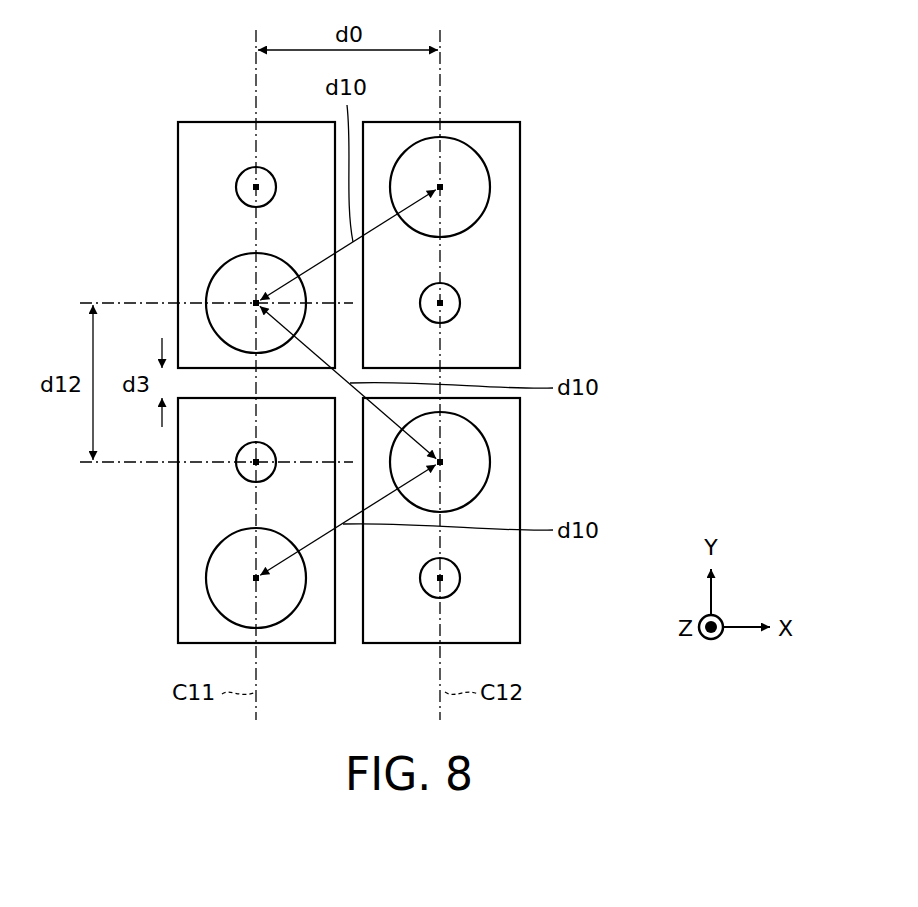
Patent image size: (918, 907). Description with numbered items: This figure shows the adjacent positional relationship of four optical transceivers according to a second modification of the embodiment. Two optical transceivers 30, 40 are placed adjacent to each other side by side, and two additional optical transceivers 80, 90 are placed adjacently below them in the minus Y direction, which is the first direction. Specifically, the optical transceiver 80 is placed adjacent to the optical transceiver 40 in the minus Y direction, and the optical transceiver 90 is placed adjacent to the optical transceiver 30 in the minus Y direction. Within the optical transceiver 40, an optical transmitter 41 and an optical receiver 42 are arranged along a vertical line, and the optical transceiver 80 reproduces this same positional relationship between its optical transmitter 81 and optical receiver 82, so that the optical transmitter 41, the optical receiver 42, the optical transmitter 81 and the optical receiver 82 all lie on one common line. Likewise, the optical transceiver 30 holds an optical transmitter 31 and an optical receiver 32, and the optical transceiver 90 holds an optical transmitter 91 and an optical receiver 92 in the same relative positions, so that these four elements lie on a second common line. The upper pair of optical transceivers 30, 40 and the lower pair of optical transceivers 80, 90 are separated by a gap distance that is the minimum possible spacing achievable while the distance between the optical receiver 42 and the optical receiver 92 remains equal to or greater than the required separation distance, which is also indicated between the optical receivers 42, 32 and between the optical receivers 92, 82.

The optical transceiver 30 is at (520, 136).
The optical transmitter 31 is at (443, 303).
The optical receiver 32 is at (443, 187).
The optical transceiver 40 is at (178, 136).
The optical transmitter 41 is at (253, 188).
The optical receiver 42 is at (254, 302).
The optical transceiver 80 is at (178, 623).
The optical transmitter 81 is at (253, 463).
The optical receiver 82 is at (253, 578).
The optical transceiver 90 is at (520, 623).
The optical transmitter 91 is at (443, 578).
The optical receiver 92 is at (443, 462).